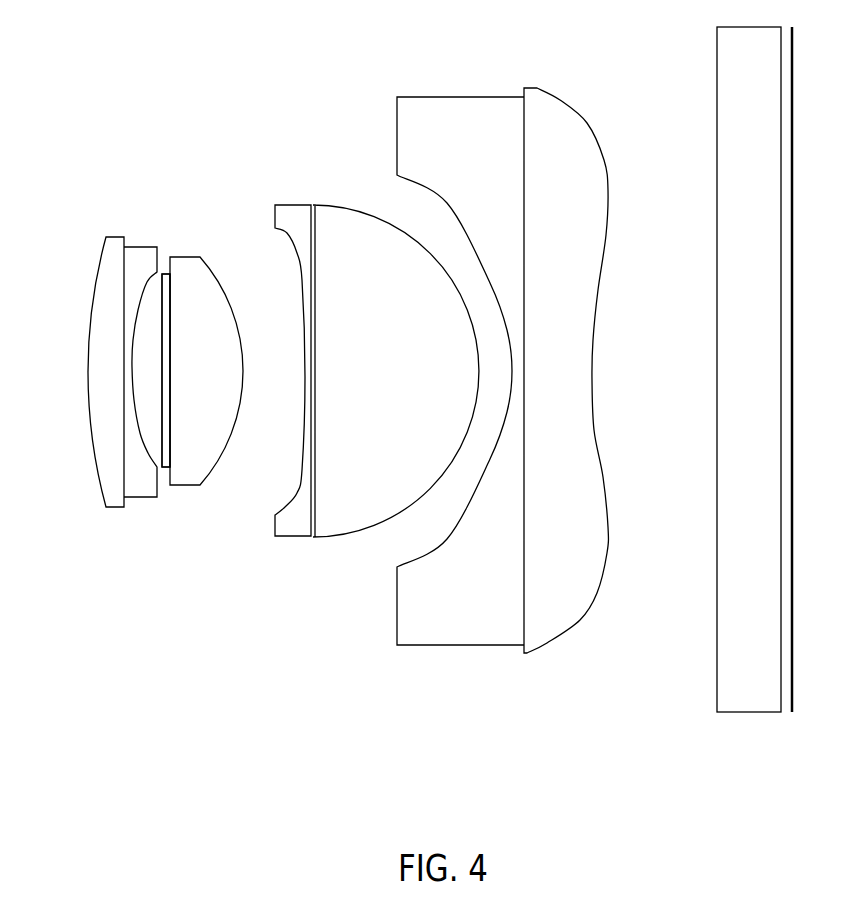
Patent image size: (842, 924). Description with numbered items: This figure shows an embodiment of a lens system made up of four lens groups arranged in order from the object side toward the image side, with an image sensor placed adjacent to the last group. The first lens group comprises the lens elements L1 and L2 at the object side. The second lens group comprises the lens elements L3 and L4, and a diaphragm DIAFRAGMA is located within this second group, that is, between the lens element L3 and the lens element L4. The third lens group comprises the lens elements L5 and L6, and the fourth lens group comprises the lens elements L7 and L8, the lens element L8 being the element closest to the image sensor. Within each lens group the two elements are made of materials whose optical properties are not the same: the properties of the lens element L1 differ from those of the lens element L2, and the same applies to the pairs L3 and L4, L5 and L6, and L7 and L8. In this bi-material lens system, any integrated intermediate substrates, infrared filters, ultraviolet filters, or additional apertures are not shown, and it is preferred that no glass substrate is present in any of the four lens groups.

The lens element L1 is at (93, 283).
The lens element L2 is at (138, 447).
The lens element L3 is at (160, 312).
The diaphragm DIAFRAGMA is at (173, 326).
The lens element L4 is at (220, 472).
The lens element L5 is at (301, 367).
The lens element L6 is at (347, 203).
The lens element L7 is at (445, 203).
The lens element L8 is at (585, 122).